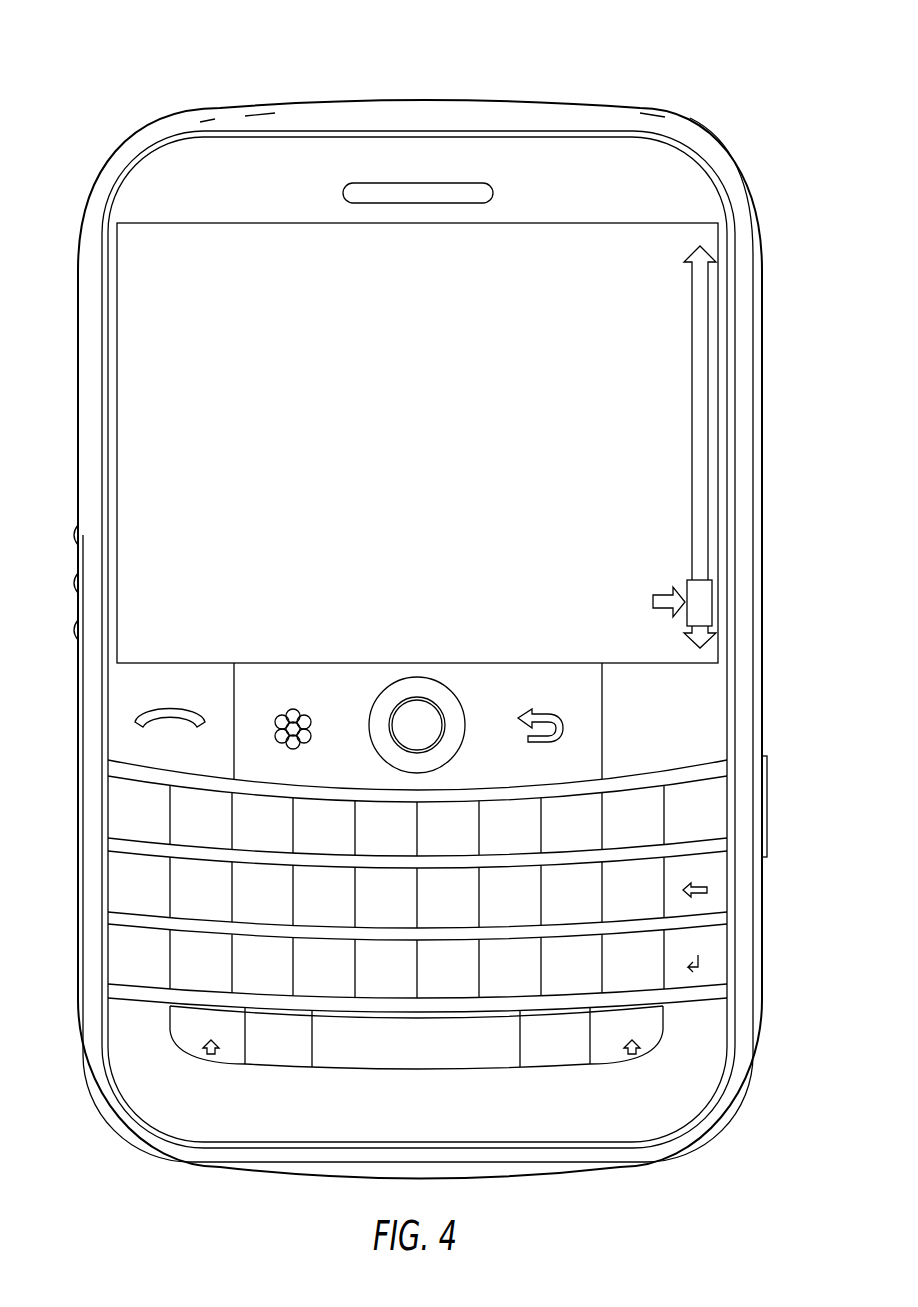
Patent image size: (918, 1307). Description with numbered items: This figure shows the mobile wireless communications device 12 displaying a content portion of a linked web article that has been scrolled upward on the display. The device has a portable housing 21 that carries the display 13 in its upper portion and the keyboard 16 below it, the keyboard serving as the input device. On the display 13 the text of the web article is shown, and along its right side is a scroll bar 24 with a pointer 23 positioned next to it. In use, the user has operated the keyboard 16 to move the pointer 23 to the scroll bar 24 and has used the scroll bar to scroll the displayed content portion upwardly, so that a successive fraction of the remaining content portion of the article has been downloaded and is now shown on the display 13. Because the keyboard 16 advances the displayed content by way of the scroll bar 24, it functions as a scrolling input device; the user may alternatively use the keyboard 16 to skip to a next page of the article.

The mobile wireless communications device 12 is at (136, 51).
The portable housing 21 is at (100, 182).
The display 13 is at (133, 495).
The scroll bar 24 is at (710, 288).
The pointer 23 is at (662, 594).
The keyboard 16 is at (125, 822).